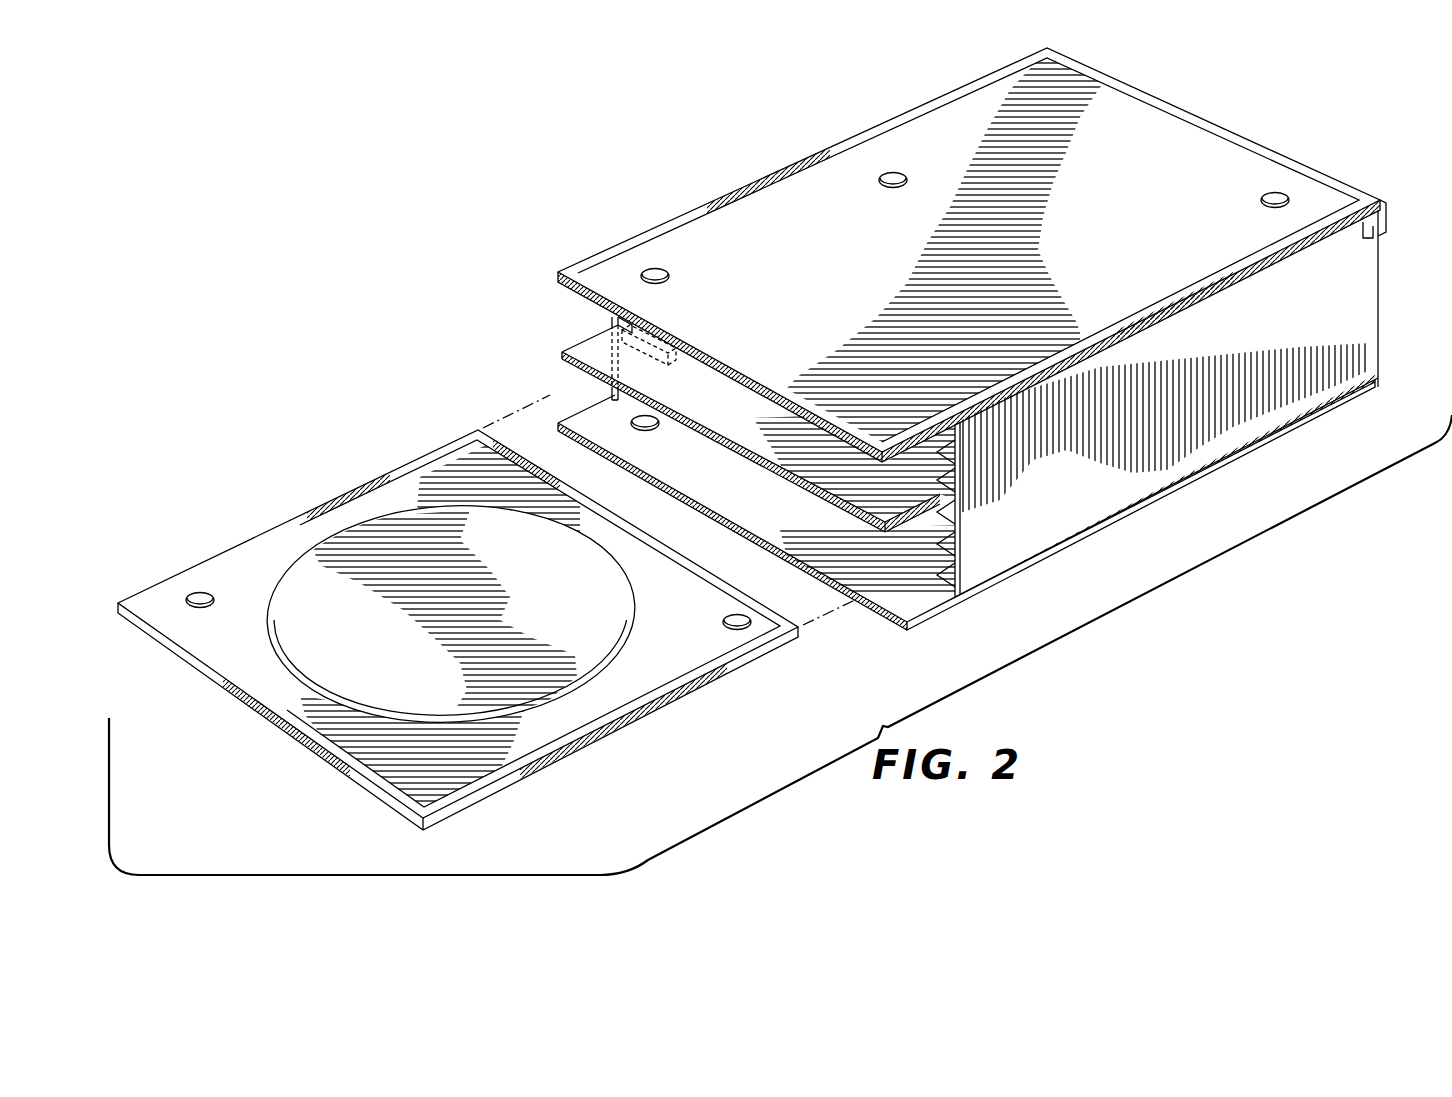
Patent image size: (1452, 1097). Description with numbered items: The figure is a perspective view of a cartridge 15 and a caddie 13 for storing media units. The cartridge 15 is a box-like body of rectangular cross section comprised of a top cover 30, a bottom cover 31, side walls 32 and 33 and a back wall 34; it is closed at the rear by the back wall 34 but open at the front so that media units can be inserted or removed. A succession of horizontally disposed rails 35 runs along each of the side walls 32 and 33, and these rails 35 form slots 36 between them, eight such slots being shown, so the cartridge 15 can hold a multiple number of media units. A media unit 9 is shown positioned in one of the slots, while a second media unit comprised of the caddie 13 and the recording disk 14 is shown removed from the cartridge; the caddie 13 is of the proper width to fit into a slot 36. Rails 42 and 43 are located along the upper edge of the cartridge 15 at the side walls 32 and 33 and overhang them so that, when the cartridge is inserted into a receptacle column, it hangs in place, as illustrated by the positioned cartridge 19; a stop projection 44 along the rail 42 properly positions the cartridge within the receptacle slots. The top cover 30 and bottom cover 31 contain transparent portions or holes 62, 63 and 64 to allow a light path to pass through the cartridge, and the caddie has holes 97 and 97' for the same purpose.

The cartridge 19 is at (610, 223).
The top cover 30 is at (973, 117).
The rail 43 is at (893, 119).
The rail 42 is at (1305, 237).
The stop projection 44 is at (1392, 210).
The hole 62 is at (667, 276).
The hole 64 is at (903, 174).
The hole 63 is at (1263, 195).
The back wall 34 is at (1194, 403).
The side wall 32 is at (1130, 483).
The bottom cover 31 is at (1112, 516).
The cartridge 15 is at (1227, 472).
The rails 35 is at (937, 552).
The media unit 9 is at (590, 353).
The side wall 33 is at (612, 318).
The slot 36 is at (655, 378).
The caddie 13 is at (458, 630).
The recording disk 14 is at (607, 612).
The hole 97 is at (222, 588).
The hole 97' is at (708, 623).